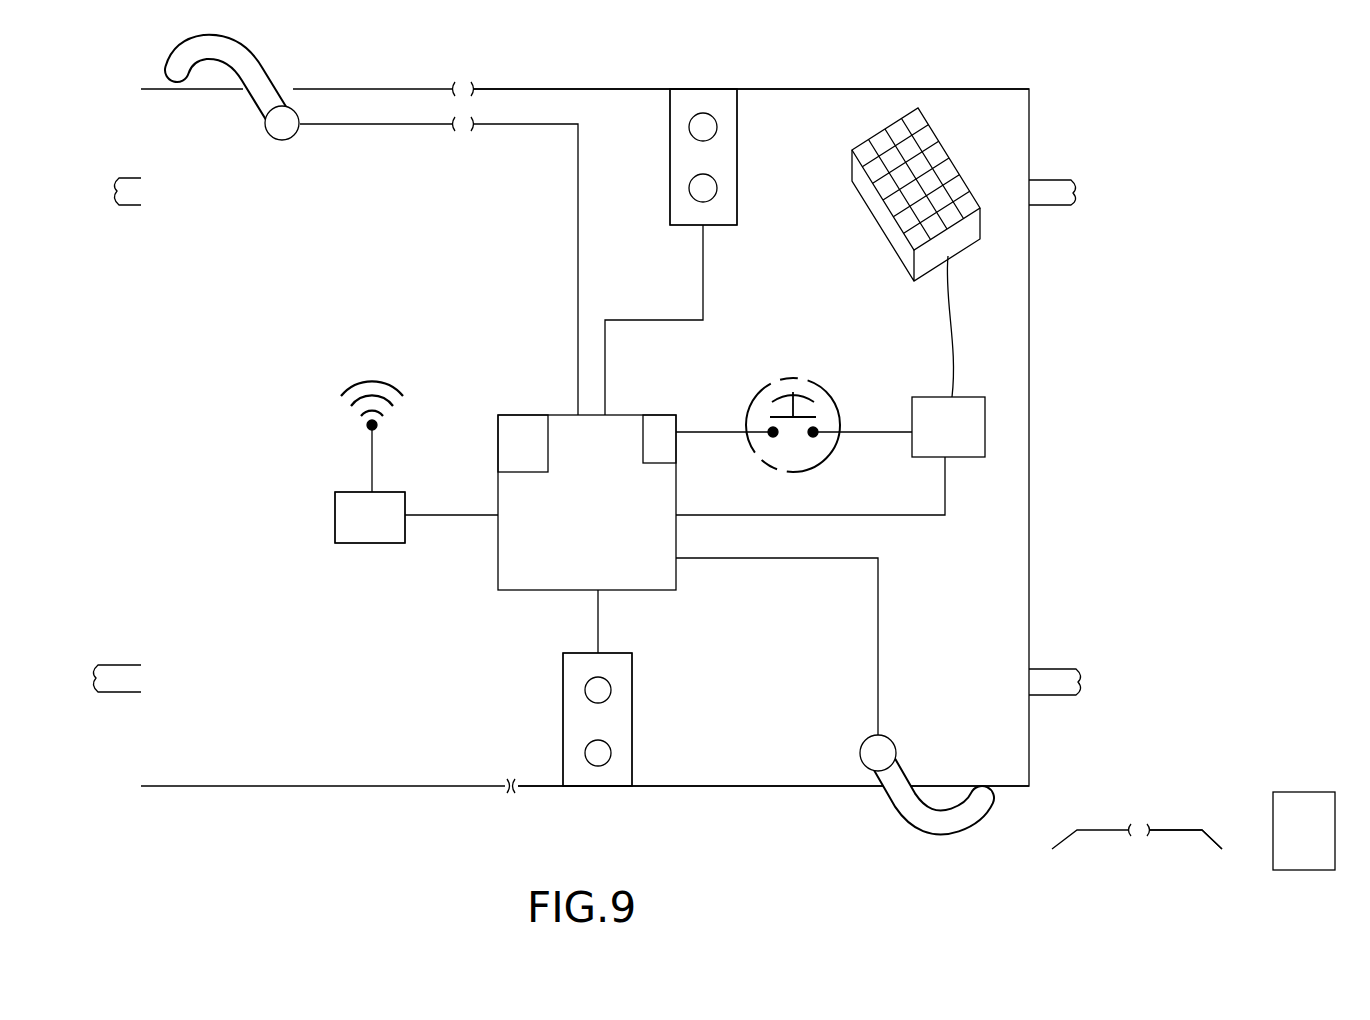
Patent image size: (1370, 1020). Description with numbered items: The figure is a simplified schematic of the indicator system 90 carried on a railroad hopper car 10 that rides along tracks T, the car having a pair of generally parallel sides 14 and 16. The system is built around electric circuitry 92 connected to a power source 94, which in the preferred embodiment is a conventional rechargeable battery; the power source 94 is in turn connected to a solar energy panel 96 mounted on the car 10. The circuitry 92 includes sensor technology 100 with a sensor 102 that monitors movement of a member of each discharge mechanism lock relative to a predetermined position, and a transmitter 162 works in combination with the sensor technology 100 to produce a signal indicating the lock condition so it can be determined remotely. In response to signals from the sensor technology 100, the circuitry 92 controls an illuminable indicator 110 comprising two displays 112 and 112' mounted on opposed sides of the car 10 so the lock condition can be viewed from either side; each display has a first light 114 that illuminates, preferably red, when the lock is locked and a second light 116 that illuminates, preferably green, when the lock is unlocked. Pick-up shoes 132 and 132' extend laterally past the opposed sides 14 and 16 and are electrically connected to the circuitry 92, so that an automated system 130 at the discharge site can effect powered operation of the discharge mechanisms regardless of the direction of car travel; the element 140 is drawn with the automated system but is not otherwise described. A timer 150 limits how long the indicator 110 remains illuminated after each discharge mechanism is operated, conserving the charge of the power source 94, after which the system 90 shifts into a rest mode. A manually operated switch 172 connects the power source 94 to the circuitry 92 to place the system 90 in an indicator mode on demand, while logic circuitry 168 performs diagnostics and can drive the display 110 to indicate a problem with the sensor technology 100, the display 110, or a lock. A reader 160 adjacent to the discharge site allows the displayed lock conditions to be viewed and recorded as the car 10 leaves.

The railroad hopper car 10 is at (1068, 130).
The side of hopper 14 is at (697, 790).
The side of hopper 16 is at (840, 90).
The tracks T is at (134, 203).
The indicator system 90 is at (425, 343).
The electric circuitry 92 is at (520, 612).
The power source 94 is at (918, 392).
The solar energy panel 96 is at (884, 263).
The sensor technology 100 is at (372, 562).
The sensor 102 is at (347, 522).
The illuminable indicator 110 is at (646, 232).
The illuminable display 112 is at (565, 719).
The illuminable display 112' is at (673, 157).
The first light 114 is at (707, 190).
The second light 116 is at (707, 128).
The automated system 130 is at (1108, 820).
The pick-up shoe 132 is at (921, 798).
The pick-up shoe 132' is at (256, 91).
The strap end 140 is at (1173, 828).
The timer 150 is at (655, 420).
The reader 160 is at (1300, 773).
The transmitter 162 is at (348, 465).
The logic circuitry 168 is at (516, 427).
The manually operated switch 172 is at (836, 398).